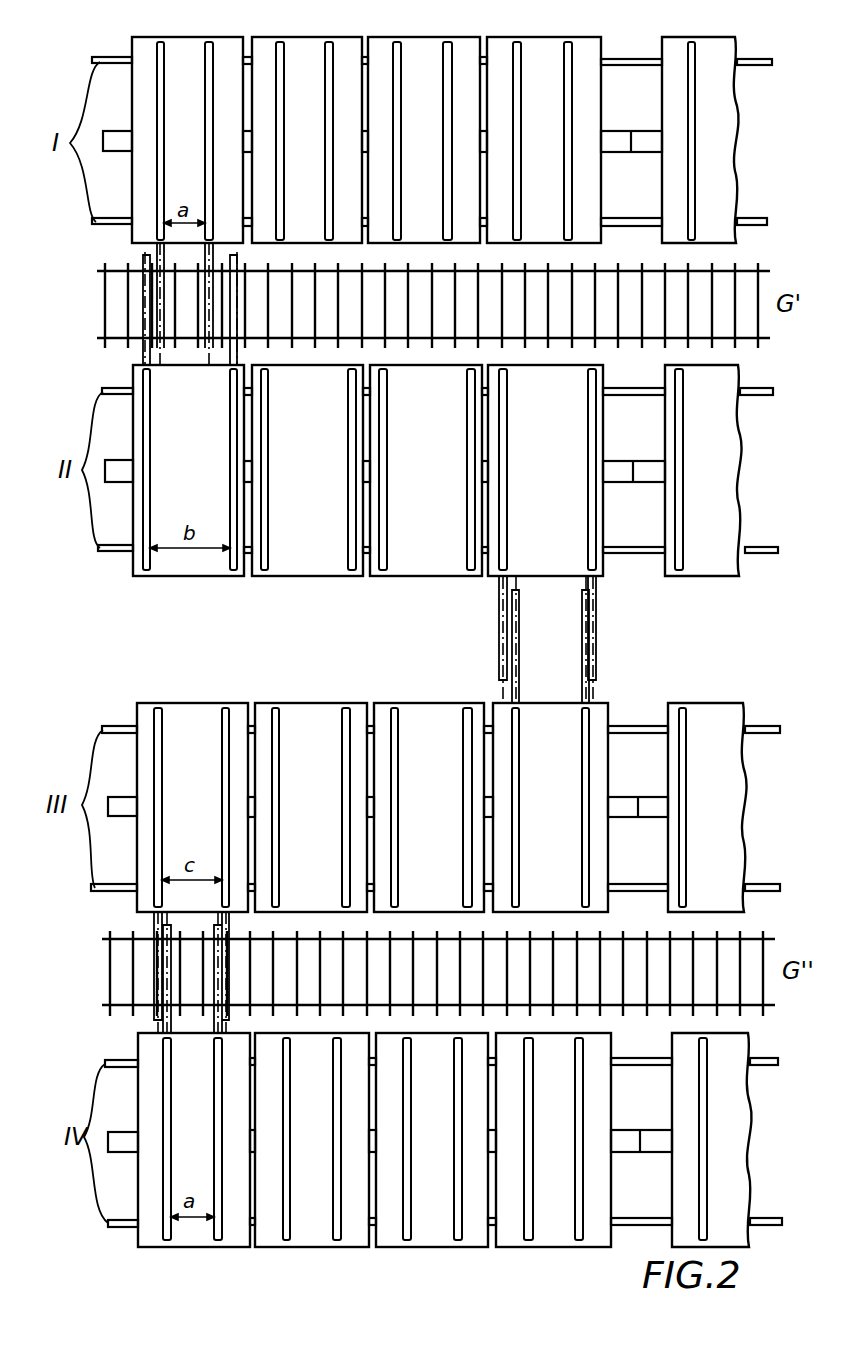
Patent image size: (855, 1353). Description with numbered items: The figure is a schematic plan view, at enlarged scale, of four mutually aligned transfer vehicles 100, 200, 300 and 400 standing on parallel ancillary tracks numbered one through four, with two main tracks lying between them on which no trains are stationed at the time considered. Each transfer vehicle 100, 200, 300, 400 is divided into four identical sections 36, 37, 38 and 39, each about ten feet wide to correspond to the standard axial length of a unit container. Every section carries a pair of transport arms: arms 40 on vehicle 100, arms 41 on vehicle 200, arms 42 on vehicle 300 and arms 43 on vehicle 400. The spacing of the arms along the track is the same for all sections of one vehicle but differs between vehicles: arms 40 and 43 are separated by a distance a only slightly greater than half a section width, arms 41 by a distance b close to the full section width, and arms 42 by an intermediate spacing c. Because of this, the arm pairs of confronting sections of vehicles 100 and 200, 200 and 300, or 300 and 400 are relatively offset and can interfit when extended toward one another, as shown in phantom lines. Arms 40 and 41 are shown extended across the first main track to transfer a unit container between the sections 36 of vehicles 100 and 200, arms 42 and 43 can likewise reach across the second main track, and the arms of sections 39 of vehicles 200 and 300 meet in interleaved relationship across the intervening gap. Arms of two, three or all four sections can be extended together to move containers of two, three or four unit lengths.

The section 36 is at (173, 110).
The section 37 is at (288, 110).
The section 38 is at (407, 110).
The section 39 is at (524, 110).
The transport arms 40 is at (164, 176).
The transport arms 41 is at (230, 506).
The transport arms 42 is at (162, 838).
The transport arms 43 is at (214, 1179).
The transfer vehicle 100 is at (122, 38).
The transfer vehicle 200 is at (138, 580).
The transfer vehicle 300 is at (150, 690).
The transfer vehicle 400 is at (122, 1247).